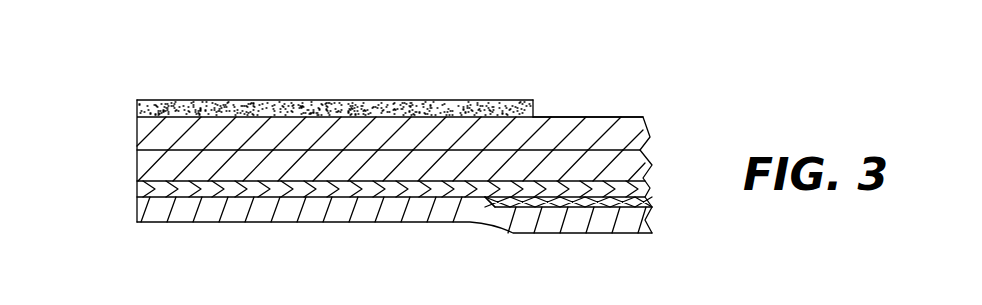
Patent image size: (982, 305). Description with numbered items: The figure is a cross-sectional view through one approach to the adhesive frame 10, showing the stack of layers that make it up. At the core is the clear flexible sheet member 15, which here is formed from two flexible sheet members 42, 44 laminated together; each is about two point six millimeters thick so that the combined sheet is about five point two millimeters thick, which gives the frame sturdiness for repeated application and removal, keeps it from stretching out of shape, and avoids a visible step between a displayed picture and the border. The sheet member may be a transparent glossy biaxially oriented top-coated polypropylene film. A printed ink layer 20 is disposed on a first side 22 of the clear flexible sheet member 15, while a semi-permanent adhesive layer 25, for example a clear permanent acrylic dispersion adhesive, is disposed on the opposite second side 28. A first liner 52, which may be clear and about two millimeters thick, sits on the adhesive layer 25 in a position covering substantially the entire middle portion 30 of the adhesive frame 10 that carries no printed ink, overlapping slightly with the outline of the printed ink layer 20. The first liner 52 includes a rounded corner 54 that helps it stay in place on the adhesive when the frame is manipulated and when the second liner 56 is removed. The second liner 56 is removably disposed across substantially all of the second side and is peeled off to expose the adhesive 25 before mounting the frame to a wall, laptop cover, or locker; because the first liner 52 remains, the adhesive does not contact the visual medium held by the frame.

The adhesive frame 10 is at (118, 50).
The clear flexible sheet member 15 is at (87, 148).
The printed ink layer 20 is at (145, 100).
The first side 22 is at (270, 96).
The semi-permanent adhesive layer 25 is at (143, 190).
The second side 28 is at (268, 232).
The middle portion 30 is at (602, 116).
The flexible sheet member 42 is at (145, 128).
The flexible sheet member 44 is at (145, 162).
The first liner 52 is at (650, 202).
The rounded corner 54 is at (487, 209).
The second liner 56 is at (158, 212).